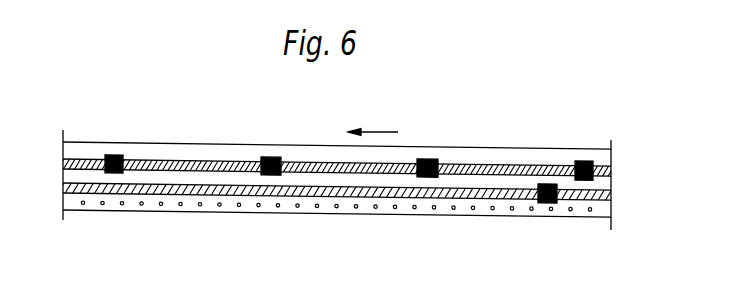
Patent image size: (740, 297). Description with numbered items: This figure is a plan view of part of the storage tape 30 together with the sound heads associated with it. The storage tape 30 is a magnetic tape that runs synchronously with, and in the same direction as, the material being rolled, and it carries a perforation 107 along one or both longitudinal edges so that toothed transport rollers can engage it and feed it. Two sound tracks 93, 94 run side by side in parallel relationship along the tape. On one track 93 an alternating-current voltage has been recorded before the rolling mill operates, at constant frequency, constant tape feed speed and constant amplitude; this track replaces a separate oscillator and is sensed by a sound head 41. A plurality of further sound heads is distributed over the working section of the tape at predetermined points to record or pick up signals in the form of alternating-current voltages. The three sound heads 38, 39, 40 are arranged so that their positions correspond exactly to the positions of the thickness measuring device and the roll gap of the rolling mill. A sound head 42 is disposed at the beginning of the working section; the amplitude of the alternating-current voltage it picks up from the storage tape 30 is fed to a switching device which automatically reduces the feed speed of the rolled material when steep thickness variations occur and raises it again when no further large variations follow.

The sound head 38 is at (117, 155).
The sound head 39 is at (262, 157).
The sound head 40 is at (428, 160).
The sound head 41 is at (543, 203).
The sound head 42 is at (580, 161).
The sound track 94 is at (321, 164).
The sound track 93 is at (330, 190).
The storage tape 30 is at (403, 207).
The perforation 107 is at (162, 204).